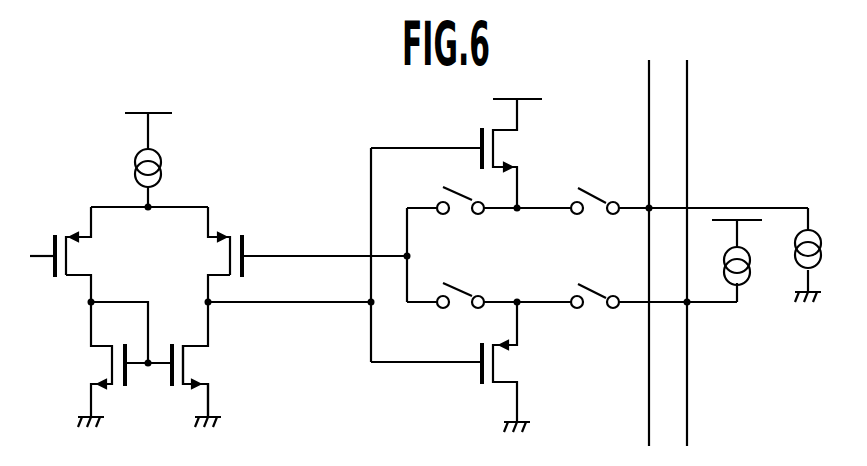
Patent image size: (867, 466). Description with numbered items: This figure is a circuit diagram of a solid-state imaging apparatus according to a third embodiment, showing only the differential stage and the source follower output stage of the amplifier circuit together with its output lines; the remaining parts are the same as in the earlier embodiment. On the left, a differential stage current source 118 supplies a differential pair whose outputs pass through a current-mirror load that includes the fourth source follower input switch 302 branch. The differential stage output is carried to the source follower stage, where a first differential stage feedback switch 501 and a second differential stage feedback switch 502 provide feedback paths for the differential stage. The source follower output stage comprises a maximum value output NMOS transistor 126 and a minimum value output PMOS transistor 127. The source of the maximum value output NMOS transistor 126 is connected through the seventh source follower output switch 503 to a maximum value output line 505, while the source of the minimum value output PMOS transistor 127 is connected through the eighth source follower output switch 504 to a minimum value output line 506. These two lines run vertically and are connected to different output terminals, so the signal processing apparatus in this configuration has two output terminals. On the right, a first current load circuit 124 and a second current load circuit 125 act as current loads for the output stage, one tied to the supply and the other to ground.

The differential stage current source 118 is at (135, 169).
The fourth source follower input switch 302 is at (203, 367).
The maximum value output NMOS transistor 126 is at (481, 142).
The minimum value output PMOS transistor 127 is at (480, 372).
The first differential stage feedback switch 501 is at (445, 186).
The second differential stage feedback switch 502 is at (462, 288).
The seventh source follower output switch 503 is at (597, 187).
The eighth source follower output switch 504 is at (593, 308).
The maximum value output line 505 is at (648, 90).
The minimum value output line 506 is at (688, 108).
The first current load circuit 124 is at (742, 285).
The second current load circuit 125 is at (790, 258).